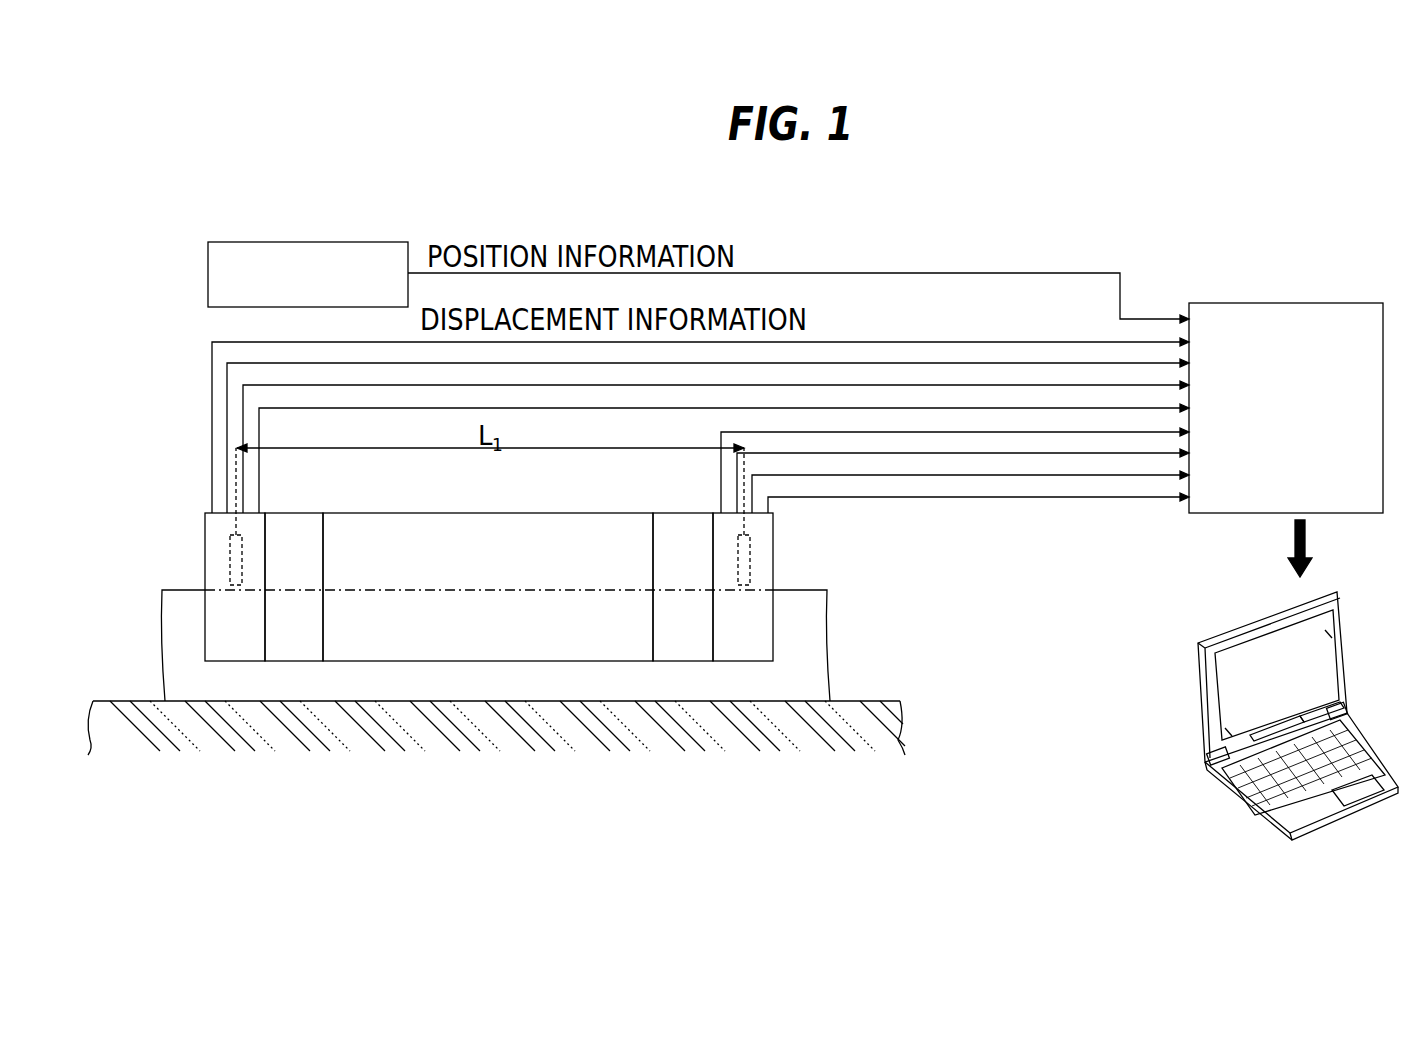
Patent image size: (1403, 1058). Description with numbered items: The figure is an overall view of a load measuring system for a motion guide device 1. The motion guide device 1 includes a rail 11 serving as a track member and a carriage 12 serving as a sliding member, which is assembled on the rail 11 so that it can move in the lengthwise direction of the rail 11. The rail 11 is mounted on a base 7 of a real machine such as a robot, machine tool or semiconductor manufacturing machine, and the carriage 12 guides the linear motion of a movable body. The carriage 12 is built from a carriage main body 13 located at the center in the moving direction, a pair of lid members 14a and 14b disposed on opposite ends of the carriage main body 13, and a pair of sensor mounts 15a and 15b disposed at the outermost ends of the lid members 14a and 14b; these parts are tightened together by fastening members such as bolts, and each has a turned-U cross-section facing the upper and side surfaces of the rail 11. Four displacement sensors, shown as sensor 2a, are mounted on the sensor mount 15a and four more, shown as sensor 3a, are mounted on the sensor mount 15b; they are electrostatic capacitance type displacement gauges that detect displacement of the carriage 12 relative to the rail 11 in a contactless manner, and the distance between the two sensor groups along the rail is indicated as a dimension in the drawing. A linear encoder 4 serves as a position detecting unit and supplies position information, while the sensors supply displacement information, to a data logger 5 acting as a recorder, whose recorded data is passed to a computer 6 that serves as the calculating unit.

The motion guide device 1 is at (495, 673).
The sensor 2a is at (236, 560).
The sensor 3a is at (745, 560).
The linear encoder 4 is at (356, 242).
The data logger 5 is at (1292, 303).
The computer 6 is at (1348, 656).
The base 7 is at (884, 702).
The rail 11 is at (412, 688).
The carriage 12 is at (490, 645).
The carriage main body 13 is at (565, 640).
The lid member 14a is at (297, 645).
The lid member 14b is at (680, 645).
The sensor mount 15a is at (237, 645).
The sensor mount 15b is at (742, 645).